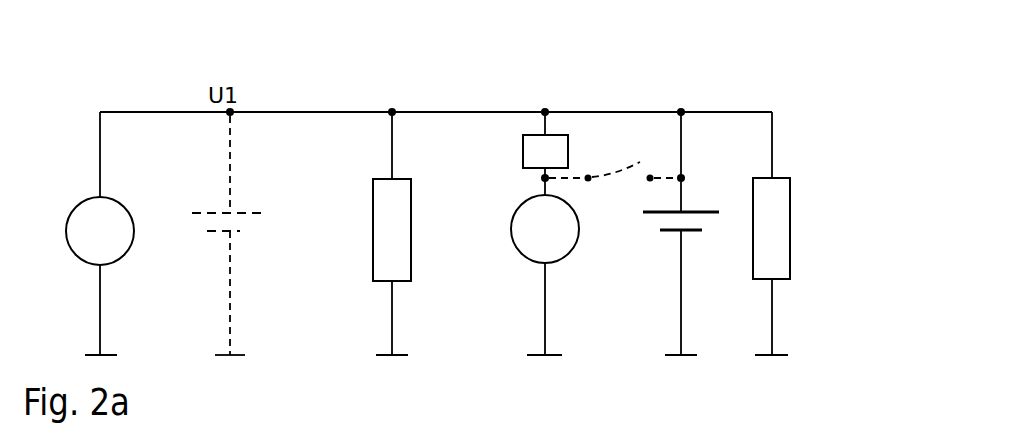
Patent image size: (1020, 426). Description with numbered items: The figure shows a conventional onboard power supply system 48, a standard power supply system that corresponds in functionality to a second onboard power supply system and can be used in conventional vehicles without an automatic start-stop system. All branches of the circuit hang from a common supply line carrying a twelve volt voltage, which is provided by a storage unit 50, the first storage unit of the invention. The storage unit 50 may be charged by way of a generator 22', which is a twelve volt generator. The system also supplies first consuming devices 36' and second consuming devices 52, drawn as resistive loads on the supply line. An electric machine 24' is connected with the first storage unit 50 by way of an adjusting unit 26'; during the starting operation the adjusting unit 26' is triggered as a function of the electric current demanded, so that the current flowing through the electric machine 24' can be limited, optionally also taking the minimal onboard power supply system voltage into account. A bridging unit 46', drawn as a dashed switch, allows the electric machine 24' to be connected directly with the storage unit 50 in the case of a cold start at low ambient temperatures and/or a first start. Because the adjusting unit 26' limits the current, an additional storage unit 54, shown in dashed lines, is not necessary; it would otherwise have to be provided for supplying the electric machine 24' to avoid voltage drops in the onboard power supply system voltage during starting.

The generator 22' is at (109, 233).
The additional storage unit 54 is at (248, 232).
The second consuming devices 52 is at (412, 252).
The adjusting unit 26' is at (517, 140).
The electric machine 24' is at (554, 261).
The bridging unit 46' is at (613, 124).
The conventional onboard power supply system 48 is at (678, 90).
The storage unit 50 is at (690, 231).
The first consuming devices 36' is at (802, 233).